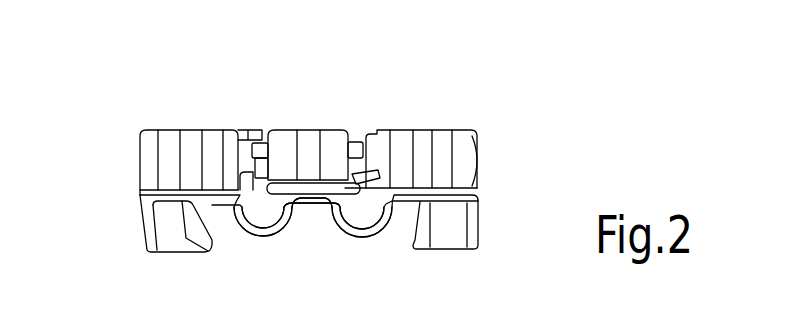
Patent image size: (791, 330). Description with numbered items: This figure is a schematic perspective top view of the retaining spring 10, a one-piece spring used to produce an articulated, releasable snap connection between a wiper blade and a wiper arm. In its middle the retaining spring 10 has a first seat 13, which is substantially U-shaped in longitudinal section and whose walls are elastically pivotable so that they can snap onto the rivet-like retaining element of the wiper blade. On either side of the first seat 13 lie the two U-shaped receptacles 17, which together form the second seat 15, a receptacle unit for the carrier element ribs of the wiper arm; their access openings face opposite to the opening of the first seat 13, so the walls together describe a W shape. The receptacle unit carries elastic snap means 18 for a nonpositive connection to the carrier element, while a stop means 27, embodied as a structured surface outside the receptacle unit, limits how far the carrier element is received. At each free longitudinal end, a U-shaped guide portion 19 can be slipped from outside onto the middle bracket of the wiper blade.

The retaining spring 10 is at (513, 130).
The first seat 13 is at (312, 224).
The second seat 15 is at (262, 121).
The receptacles 17 is at (263, 220).
The elastic snap means 18 is at (310, 122).
The guide portion 19 is at (163, 232).
The stop means 27 is at (176, 150).